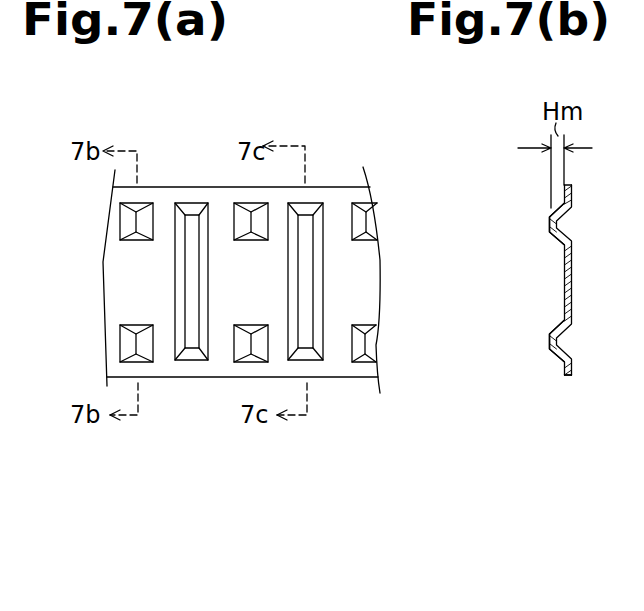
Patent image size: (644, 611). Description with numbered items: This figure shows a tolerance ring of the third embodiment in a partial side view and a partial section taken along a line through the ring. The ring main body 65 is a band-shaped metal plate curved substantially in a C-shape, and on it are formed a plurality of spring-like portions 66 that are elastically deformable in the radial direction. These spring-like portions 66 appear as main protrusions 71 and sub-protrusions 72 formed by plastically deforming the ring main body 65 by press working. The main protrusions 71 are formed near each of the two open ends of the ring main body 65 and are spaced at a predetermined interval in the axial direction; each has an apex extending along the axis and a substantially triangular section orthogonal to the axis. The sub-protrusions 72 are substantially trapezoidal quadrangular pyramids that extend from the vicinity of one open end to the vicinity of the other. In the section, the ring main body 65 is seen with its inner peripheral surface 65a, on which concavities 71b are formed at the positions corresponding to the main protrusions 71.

In FIG. 7A, the ring main body 65 is at (163, 193).
In FIG. 7B, the ring main body 65 is at (572, 193).
In FIG. 7B, the inner peripheral surface 65a is at (570, 376).
In FIG. 7A, the spring-like portions 66 is at (268, 263).
In FIG. 7A, the main protrusion 71 is at (162, 391).
In FIG. 7B, the main protrusion 71 is at (552, 220).
In FIG. 7B, the concavity 71b is at (550, 234).
In FIG. 7A, the sub-protrusion 72 is at (192, 207).